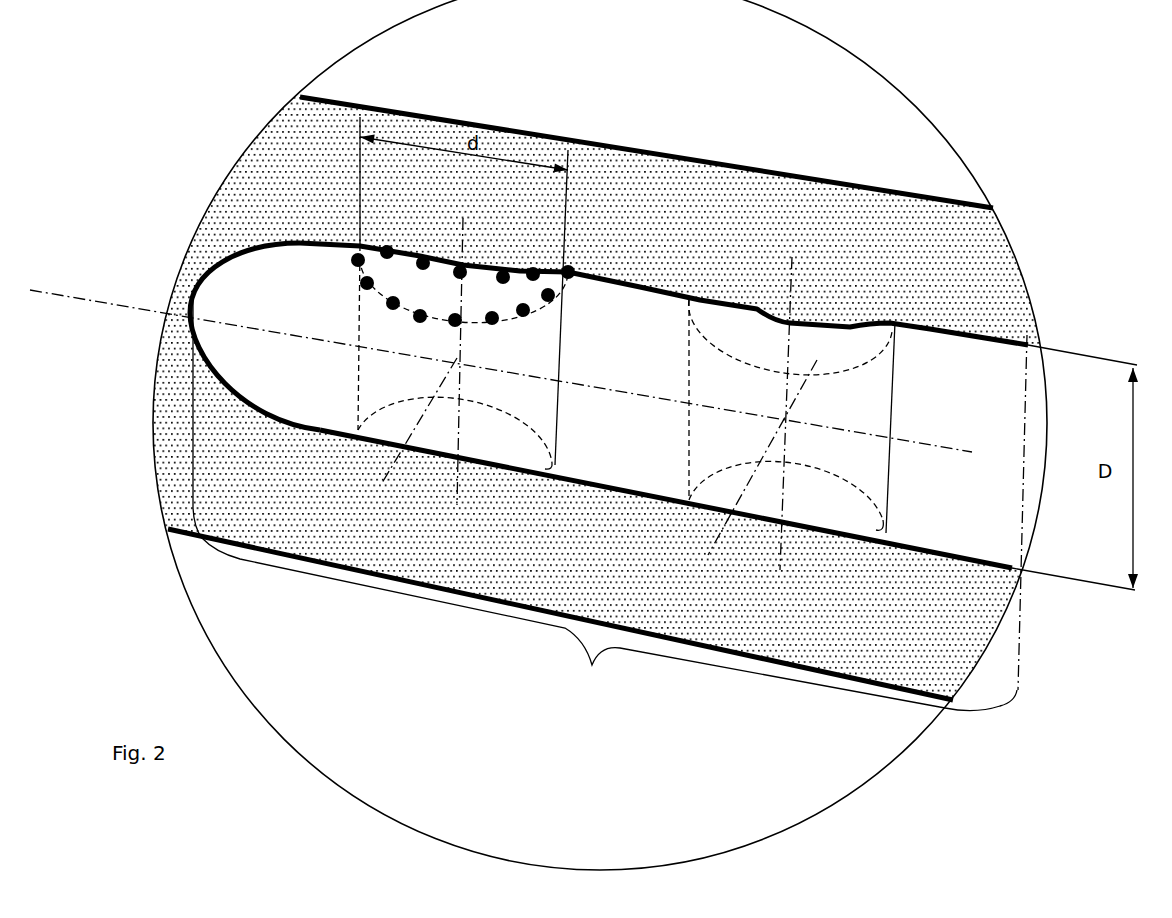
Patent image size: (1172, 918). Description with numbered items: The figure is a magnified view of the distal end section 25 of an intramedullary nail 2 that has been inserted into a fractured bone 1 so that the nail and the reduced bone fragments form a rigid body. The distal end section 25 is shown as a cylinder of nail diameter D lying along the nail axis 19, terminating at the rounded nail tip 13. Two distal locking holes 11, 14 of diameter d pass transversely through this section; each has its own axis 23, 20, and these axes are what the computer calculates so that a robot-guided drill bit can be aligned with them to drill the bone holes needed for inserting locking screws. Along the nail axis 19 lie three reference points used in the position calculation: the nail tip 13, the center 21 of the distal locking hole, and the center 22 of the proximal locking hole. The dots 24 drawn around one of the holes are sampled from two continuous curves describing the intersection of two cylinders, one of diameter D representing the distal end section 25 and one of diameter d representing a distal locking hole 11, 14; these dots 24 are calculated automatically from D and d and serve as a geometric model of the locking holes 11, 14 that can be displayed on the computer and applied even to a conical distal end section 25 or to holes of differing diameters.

The bone 1 is at (708, 157).
The intramedullary nail 2 is at (980, 570).
The distal locking hole 11 is at (862, 345).
The nail tip 13 is at (190, 313).
The distal locking hole 14 is at (388, 275).
The nail axis 19 is at (160, 308).
The axis of distal locking hole 20 is at (463, 218).
The center of distal locking hole 21 is at (457, 358).
The center of proximal locking hole 22 is at (785, 417).
The axis of distal locking hole 23 is at (793, 273).
The dots 24 is at (393, 303).
The distal end section 25 is at (605, 609).